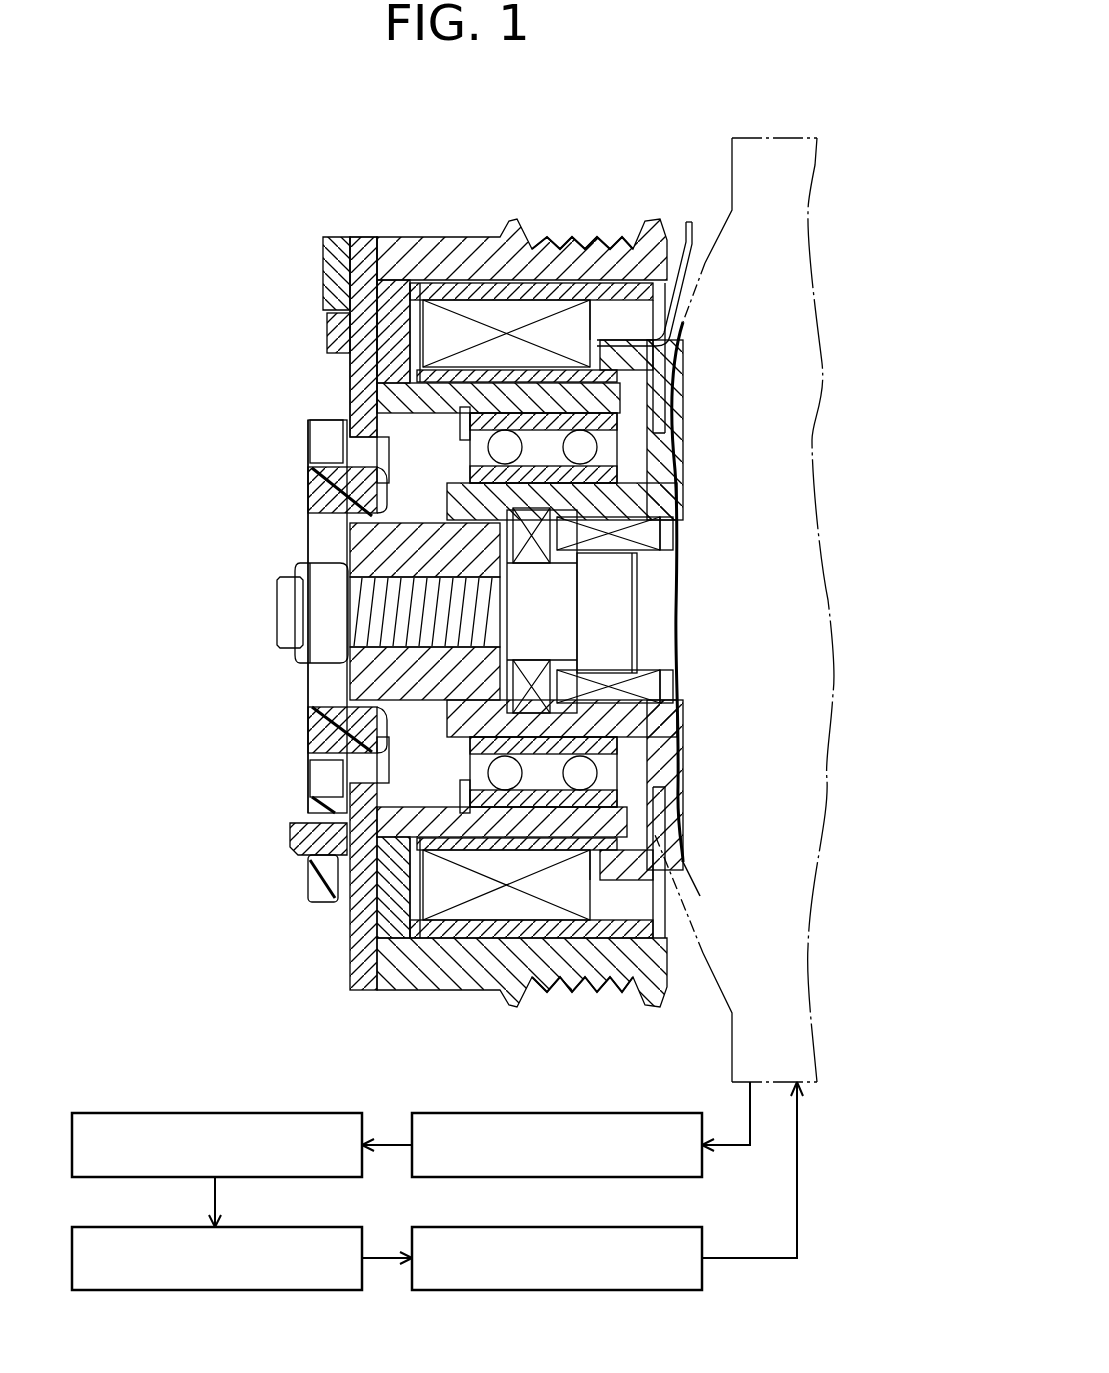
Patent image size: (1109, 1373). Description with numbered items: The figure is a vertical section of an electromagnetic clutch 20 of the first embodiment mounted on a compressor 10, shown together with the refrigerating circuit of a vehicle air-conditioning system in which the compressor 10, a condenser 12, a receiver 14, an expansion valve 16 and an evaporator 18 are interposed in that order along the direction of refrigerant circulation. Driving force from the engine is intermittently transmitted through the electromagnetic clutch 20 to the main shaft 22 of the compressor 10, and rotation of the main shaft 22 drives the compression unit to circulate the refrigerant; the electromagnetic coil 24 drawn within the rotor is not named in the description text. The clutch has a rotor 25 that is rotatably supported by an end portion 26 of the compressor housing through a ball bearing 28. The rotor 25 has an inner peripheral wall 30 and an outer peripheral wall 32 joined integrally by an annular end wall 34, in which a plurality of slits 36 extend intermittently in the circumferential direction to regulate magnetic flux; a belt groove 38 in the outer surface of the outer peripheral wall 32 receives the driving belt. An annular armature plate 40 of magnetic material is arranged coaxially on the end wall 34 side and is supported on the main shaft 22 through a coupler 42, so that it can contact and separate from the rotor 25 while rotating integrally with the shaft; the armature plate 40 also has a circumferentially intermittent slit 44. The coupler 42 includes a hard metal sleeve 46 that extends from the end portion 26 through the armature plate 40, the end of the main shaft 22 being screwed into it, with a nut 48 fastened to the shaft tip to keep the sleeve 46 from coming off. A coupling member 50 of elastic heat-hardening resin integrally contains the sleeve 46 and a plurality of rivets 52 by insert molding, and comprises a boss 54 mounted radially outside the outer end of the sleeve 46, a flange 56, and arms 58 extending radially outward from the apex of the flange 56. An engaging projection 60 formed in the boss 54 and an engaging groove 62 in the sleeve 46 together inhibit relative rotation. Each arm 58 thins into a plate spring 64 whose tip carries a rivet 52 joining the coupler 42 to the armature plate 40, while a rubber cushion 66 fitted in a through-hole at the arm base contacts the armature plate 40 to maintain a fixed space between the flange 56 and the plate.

The compressor 10 is at (812, 220).
The condenser 12 is at (665, 1113).
The receiver 14 is at (112, 1113).
The expansion valve 16 is at (330, 1290).
The evaporator 18 is at (673, 1290).
The electromagnetic clutch 20 is at (232, 600).
The main shaft 22 is at (610, 617).
The electromagnetic coil 24 is at (482, 908).
The rotor 25 is at (549, 195).
The end portion 26 is at (545, 494).
The ball bearing 28 is at (610, 750).
The inner peripheral wall 30 is at (613, 397).
The outer peripheral wall 32 is at (452, 237).
The annular end wall 34 is at (387, 900).
The slits 36 is at (398, 848).
The belt groove 38 is at (613, 240).
The armature plate 40 is at (362, 235).
The coupler 42 is at (232, 742).
The slit 44 is at (352, 355).
The sleeve 46 is at (325, 700).
The nut 48 is at (320, 568).
The coupling member 50 is at (310, 768).
The rivets 52 is at (322, 278).
The boss 54 is at (308, 726).
The flange 56 is at (305, 800).
The arms 58 is at (305, 880).
The engaging projection 60 is at (310, 538).
The engaging groove 62 is at (313, 493).
The plate spring 64 is at (330, 327).
The rubber cushion 66 is at (292, 840).